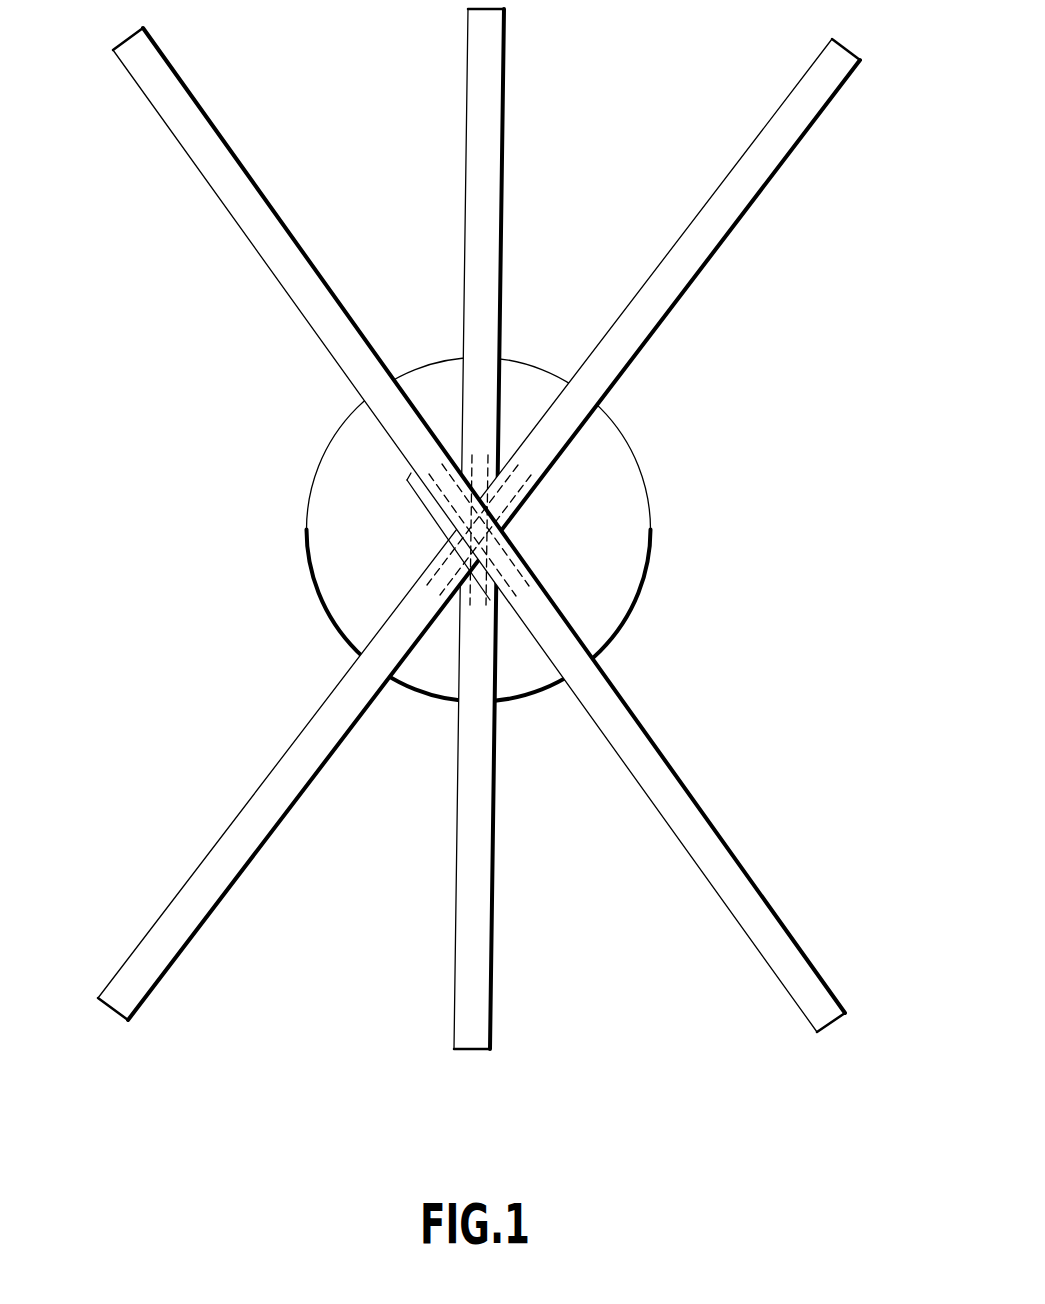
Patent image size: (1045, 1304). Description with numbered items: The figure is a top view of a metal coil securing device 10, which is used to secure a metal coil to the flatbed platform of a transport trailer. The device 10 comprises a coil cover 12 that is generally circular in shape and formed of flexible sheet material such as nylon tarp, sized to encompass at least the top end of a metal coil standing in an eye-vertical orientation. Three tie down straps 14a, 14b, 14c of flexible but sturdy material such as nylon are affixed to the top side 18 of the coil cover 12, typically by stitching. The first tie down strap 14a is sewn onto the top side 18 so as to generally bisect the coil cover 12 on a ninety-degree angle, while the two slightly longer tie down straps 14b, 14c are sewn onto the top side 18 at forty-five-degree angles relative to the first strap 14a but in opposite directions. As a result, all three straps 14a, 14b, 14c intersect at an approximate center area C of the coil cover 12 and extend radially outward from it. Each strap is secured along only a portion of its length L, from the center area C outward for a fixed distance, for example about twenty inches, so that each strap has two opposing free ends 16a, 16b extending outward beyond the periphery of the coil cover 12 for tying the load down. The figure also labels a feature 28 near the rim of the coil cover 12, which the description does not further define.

The metal coil securing device 10 is at (745, 425).
The coil cover 12 is at (632, 537).
The tie down strap 14a is at (478, 872).
The tie down strap 14b is at (262, 836).
The tie down strap 14c is at (747, 877).
The free end 16a is at (110, 1006).
The free end 16b is at (126, 42).
The top side 18 is at (586, 558).
The base rim 28 is at (628, 621).
The center area C is at (514, 529).
The length L is at (450, 547).